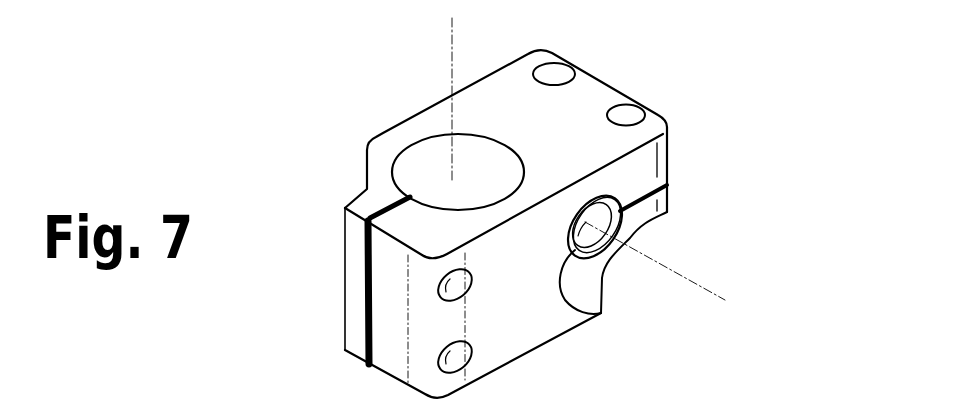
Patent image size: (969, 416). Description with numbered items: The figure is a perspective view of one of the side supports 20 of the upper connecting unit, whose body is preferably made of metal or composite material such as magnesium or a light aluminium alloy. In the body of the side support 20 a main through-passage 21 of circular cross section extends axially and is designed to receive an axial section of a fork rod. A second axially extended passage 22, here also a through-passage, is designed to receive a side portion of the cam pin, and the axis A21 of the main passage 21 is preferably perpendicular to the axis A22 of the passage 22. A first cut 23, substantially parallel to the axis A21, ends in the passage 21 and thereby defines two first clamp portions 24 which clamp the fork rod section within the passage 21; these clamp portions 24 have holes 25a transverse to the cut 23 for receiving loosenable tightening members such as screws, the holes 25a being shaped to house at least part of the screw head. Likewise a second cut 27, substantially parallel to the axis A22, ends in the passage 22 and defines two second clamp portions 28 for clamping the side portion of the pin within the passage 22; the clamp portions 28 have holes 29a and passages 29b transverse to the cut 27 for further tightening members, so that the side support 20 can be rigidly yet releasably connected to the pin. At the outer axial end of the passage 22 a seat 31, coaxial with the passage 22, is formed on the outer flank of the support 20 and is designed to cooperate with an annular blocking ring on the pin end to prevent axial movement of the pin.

The side support 20 is at (298, 150).
The main through-passage 21 is at (391, 166).
The second axially extended passage 22 is at (586, 314).
The first cut 23 is at (365, 283).
The first clamp portions 24 is at (347, 320).
The holes 25a is at (465, 283).
The second cut 27 is at (670, 178).
The second clamp portions 28 is at (662, 153).
The holes 29a is at (560, 72).
The passages 29b is at (684, 410).
The seat 31 is at (603, 283).
The axis of passage 21 A21 is at (452, 63).
The axis of passage 22 A22 is at (707, 285).